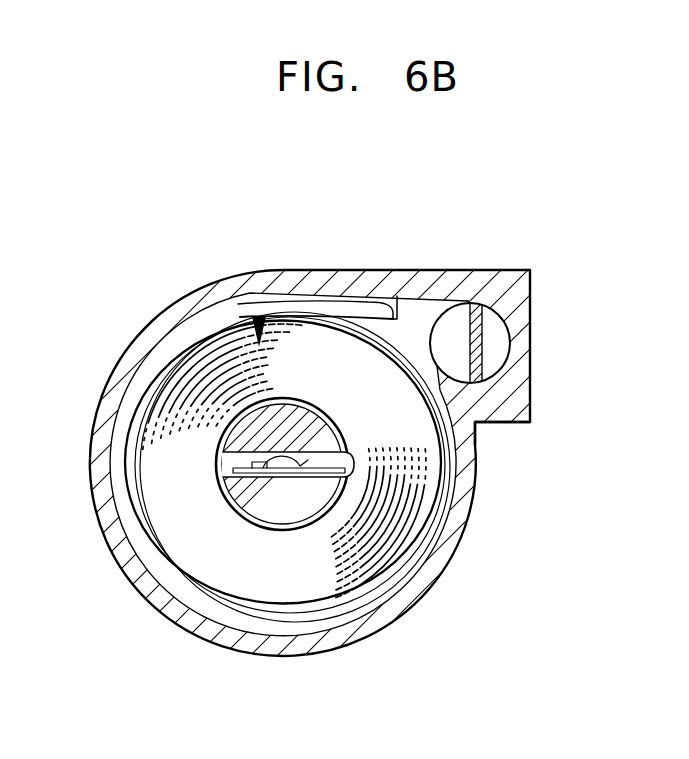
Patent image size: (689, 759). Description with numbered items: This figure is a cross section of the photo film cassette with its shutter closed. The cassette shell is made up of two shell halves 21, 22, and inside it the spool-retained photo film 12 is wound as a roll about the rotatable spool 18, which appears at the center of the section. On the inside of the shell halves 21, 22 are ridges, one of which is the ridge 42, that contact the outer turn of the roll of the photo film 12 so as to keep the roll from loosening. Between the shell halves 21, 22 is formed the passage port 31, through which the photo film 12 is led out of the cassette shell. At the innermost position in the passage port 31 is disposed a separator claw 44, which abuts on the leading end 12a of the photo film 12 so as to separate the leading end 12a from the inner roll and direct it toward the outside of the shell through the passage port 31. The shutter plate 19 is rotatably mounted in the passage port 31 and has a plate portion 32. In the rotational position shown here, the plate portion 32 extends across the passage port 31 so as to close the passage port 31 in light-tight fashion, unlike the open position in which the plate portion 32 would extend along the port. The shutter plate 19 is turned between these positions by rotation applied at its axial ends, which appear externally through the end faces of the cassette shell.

The photo film 12 is at (259, 318).
The leading end 12a is at (398, 299).
The rotatable spool 18 is at (267, 502).
The shutter plate 19 is at (497, 360).
The shell half 21 is at (345, 271).
The shell half 22 is at (270, 656).
The passage port 31 is at (518, 333).
The plate portion 32 is at (486, 421).
The ridge 42 is at (437, 519).
The separator claw 44 is at (420, 364).